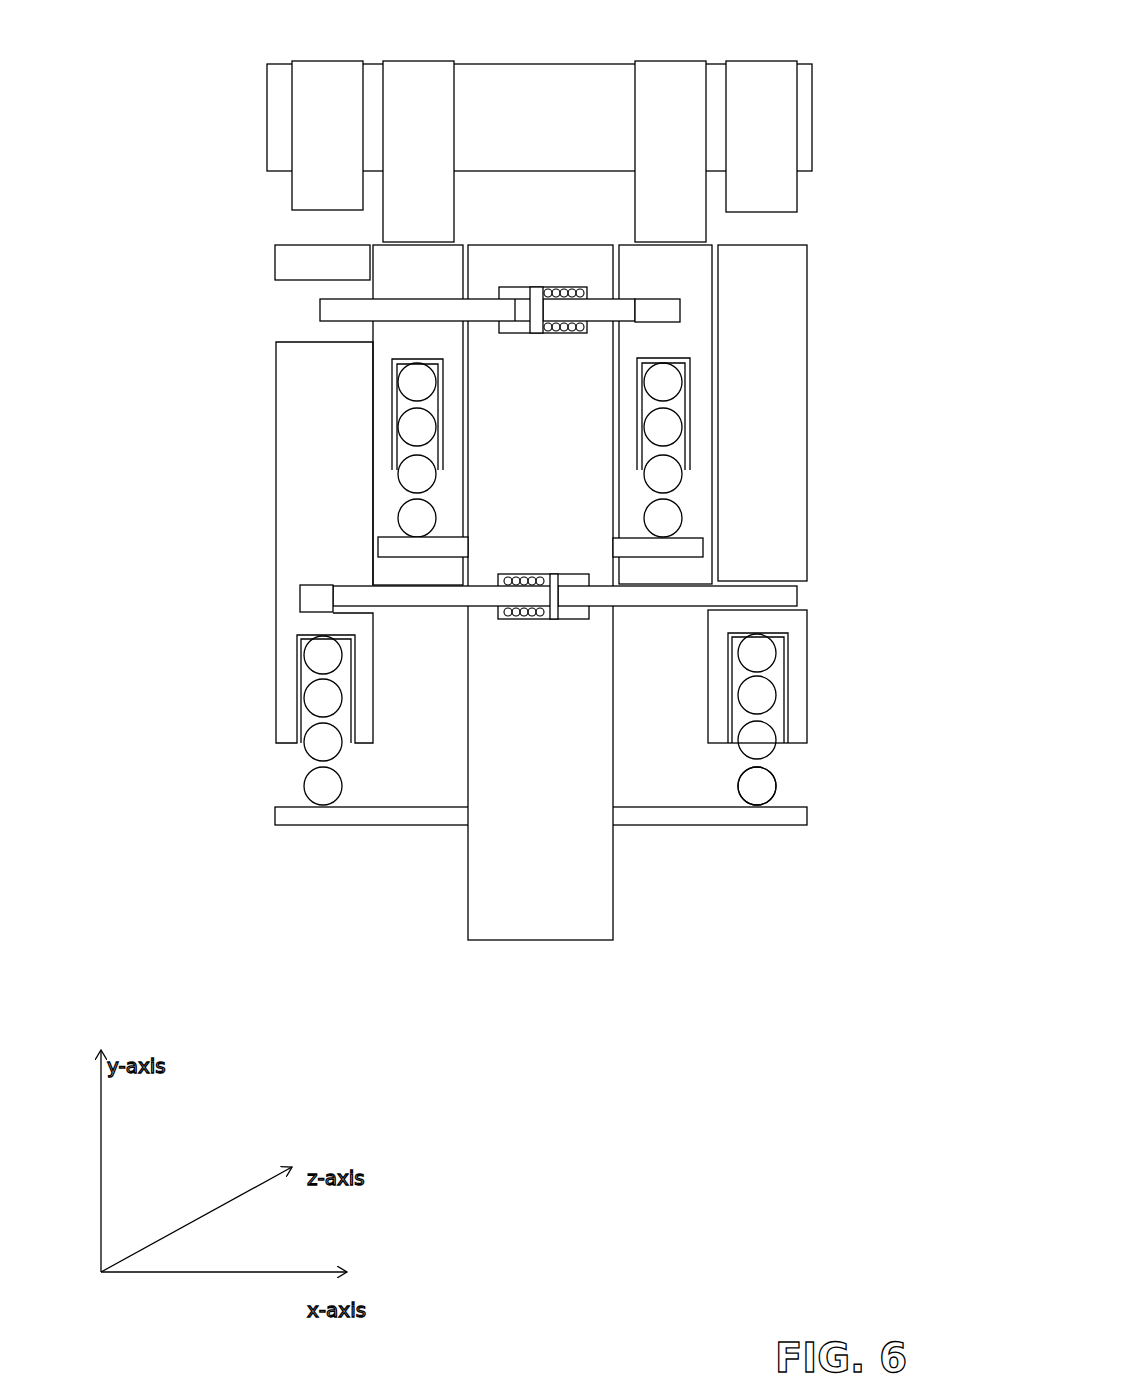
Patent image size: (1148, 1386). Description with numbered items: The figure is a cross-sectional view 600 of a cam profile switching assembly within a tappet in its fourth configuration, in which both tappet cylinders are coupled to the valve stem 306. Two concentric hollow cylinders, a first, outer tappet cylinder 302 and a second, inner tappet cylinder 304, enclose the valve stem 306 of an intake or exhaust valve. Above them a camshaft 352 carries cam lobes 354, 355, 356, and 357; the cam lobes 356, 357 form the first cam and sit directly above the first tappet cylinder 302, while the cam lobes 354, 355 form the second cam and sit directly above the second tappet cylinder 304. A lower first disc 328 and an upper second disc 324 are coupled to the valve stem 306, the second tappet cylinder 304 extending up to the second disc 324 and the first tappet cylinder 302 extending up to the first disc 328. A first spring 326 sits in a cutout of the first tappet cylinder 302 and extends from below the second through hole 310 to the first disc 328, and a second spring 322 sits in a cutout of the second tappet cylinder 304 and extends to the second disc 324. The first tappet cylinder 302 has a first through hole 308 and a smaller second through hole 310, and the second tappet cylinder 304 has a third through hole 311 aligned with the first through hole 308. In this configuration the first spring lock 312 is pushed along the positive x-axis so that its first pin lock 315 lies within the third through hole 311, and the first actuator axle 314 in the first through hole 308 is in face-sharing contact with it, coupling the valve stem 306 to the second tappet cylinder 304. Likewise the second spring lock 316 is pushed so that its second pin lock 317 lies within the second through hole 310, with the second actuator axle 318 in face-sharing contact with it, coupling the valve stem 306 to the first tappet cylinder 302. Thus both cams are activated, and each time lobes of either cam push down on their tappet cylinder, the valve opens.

The cross-sectional view 600 is at (816, 30).
The camshaft 352 is at (558, 132).
The cam lobe 354 is at (690, 138).
The cam lobe 355 is at (439, 138).
The cam lobe 356 is at (779, 138).
The cam lobe 357 is at (345, 138).
The first tappet cylinder 302 is at (766, 278).
The second tappet cylinder 304 is at (681, 278).
The valve stem 306 is at (590, 920).
The first through hole 308 is at (274, 288).
The second through hole 310 is at (320, 592).
The third through hole 311 is at (655, 312).
The first spring lock 312 is at (572, 334).
The first actuator axle 314 is at (320, 305).
The first pin lock 315 is at (602, 298).
The second spring lock 316 is at (512, 622).
The second pin lock 317 is at (453, 607).
The second actuator axle 318 is at (797, 595).
The second spring 322 is at (432, 513).
The second disc 324 is at (640, 548).
The first spring 326 is at (777, 782).
The first disc 328 is at (288, 826).